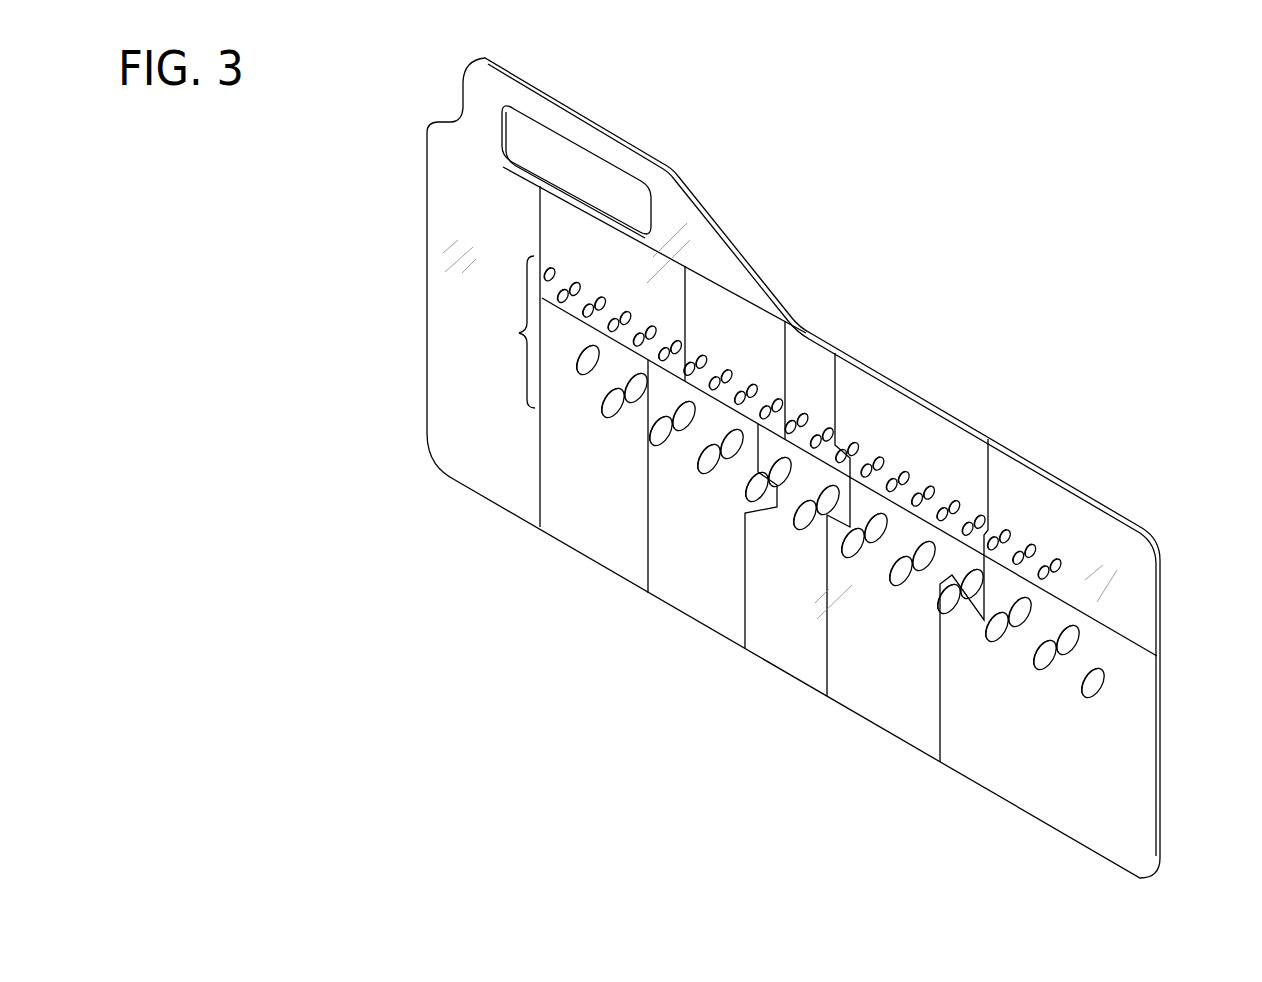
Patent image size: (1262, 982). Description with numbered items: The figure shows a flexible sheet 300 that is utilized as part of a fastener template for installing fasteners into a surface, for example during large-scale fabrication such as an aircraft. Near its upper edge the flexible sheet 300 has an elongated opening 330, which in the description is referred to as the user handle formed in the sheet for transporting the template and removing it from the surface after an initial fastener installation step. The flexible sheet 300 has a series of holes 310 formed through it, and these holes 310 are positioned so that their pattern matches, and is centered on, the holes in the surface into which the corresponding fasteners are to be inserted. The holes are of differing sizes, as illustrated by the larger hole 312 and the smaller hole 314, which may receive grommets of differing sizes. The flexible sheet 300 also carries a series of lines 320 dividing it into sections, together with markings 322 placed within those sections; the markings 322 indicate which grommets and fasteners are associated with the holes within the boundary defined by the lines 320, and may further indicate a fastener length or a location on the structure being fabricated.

The flexible sheet 300 is at (1147, 530).
The holes 310 is at (519, 333).
The hole 312 is at (1095, 699).
The hole 314 is at (1058, 561).
The lines 320 is at (757, 642).
The markings 322 is at (588, 538).
The window opening 330 is at (605, 127).